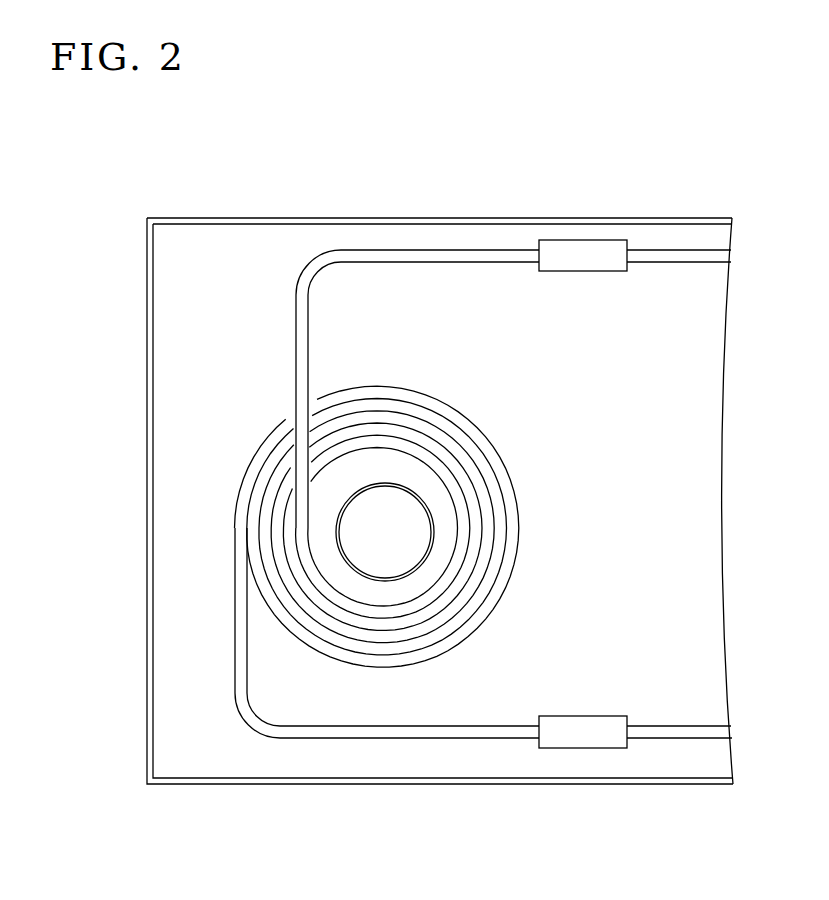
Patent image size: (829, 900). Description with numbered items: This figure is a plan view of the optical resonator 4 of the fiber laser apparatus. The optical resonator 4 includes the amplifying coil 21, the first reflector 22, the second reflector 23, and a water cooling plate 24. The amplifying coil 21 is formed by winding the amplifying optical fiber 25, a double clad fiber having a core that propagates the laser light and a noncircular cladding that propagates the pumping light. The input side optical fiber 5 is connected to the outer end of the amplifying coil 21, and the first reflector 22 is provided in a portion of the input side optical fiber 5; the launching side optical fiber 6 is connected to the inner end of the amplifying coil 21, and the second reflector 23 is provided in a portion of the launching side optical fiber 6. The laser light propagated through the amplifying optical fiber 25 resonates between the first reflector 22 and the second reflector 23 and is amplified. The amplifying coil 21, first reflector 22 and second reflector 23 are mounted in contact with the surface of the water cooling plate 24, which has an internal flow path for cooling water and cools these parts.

The optical resonator 4 is at (392, 150).
The input side optical fiber 5 is at (676, 730).
The launching side optical fiber 6 is at (676, 252).
The amplifying coil 21 is at (444, 481).
The first reflector 22 is at (580, 735).
The second reflector 23 is at (580, 255).
The water cooling plate 24 is at (227, 258).
The amplifying optical fiber 25 is at (498, 460).